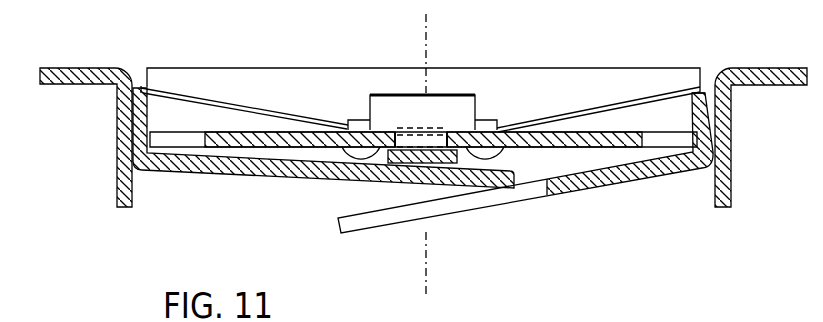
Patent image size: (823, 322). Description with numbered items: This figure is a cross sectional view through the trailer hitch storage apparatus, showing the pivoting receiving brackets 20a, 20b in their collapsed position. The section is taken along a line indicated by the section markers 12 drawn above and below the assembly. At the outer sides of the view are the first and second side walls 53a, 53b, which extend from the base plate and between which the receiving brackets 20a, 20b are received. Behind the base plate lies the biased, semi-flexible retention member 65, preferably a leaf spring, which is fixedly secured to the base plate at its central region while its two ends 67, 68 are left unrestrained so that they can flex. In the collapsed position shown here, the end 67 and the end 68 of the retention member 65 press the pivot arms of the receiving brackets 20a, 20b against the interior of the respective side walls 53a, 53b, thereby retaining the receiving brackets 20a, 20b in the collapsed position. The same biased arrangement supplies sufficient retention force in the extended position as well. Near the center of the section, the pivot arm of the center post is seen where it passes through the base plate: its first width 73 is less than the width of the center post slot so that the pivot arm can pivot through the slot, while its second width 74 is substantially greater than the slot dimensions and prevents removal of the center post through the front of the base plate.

The section line 12- 12 is at (426, 14).
The receiving bracket 20a is at (486, 208).
The receiving bracket 20b is at (318, 181).
The first side wall 53a is at (731, 136).
The second side wall 53b is at (117, 136).
The retention member 65 is at (598, 98).
The end of retention member 67 is at (677, 86).
The end of retention member 68 is at (163, 86).
The first width 73 is at (446, 135).
The second width 74 is at (388, 102).